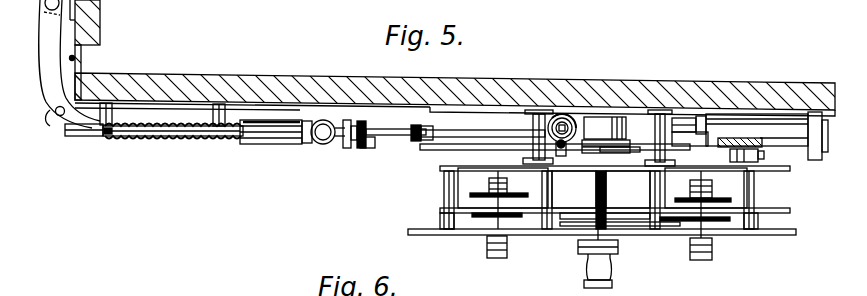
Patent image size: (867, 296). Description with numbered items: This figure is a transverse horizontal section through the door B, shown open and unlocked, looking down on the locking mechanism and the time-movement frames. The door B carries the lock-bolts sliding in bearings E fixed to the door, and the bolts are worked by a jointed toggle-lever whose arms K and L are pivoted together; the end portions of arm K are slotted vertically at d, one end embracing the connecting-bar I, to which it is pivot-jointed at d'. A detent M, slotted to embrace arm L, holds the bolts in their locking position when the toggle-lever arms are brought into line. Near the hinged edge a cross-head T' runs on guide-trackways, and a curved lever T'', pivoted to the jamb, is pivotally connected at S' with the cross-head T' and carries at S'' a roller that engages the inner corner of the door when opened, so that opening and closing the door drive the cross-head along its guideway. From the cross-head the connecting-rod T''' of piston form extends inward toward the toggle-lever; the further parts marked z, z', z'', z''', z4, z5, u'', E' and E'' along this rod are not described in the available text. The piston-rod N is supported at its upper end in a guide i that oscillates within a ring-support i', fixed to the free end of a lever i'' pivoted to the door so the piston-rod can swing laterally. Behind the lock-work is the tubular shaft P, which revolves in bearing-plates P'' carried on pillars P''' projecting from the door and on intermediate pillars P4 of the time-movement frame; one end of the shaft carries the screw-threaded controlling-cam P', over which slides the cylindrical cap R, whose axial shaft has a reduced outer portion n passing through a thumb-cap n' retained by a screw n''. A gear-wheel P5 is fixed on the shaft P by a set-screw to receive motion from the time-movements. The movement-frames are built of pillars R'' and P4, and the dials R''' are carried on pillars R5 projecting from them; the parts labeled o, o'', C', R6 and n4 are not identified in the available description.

The door B is at (300, 78).
The curved lever T'' is at (69, 64).
The roller on curved lever S'' is at (41, 122).
The pivotal connection to cross-head S' is at (82, 138).
The cross-head T' is at (161, 140).
The collar z'' is at (111, 140).
The rod z''' is at (176, 142).
The sleeve u'' is at (271, 140).
The connecting-rod T''' is at (271, 113).
The coupling ring z' is at (318, 134).
The shaft z is at (338, 123).
The collar z5 is at (358, 124).
The bracket E' is at (357, 142).
The arm of toggle-lever L is at (396, 142).
The bracket E'' is at (422, 143).
The collar z4 is at (437, 140).
The detent M is at (525, 143).
The pillars P''' is at (532, 137).
The piston-rod N is at (562, 114).
The lever i'' is at (551, 92).
The guide i is at (571, 92).
The ring-support i' is at (583, 95).
The cylindrical cap R is at (602, 163).
The pin o is at (557, 151).
The bar o'' is at (602, 152).
The controlling-cam P' is at (620, 155).
The reduced portion of axial shaft n is at (601, 179).
The bearing-plates P'' is at (631, 165).
The bearings E is at (762, 136).
The arm of toggle-lever K is at (690, 140).
The casing C' is at (757, 130).
The vertical slots d is at (732, 152).
The pivot joint d' is at (743, 164).
The connecting-bar I is at (761, 156).
The dials R''' is at (602, 209).
The pillars R'' is at (599, 200).
The foot R6 is at (442, 218).
The pillars R5 is at (757, 221).
The tubular shaft P is at (601, 200).
The intermediate pillars P4 is at (602, 189).
The gear-wheel P5 is at (605, 208).
The screw n'' is at (544, 233).
The thumb-cap n' is at (634, 229).
The plate n4 is at (651, 222).